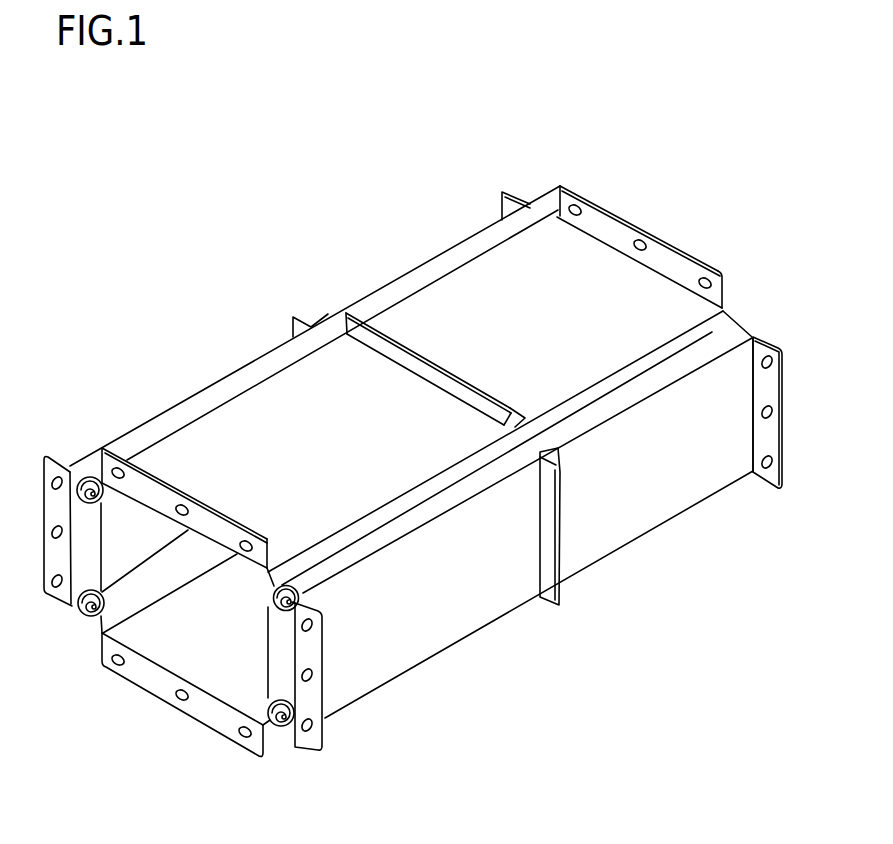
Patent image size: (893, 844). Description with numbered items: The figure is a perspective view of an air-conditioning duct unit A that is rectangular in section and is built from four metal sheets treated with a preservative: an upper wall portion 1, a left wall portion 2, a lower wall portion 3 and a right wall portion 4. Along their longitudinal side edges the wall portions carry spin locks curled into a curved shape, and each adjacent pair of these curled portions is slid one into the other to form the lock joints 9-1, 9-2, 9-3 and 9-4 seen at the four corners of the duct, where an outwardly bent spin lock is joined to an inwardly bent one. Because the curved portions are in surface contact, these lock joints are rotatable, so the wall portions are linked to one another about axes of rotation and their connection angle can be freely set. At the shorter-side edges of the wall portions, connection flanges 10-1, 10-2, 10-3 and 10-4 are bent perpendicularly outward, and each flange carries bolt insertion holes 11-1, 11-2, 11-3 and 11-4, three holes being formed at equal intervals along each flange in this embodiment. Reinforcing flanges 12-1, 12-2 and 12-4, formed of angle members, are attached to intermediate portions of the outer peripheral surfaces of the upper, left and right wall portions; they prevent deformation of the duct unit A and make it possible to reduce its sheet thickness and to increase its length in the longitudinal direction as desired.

The air-conditioning duct unit A is at (204, 326).
The upper wall portion 1 is at (273, 418).
The left wall portion 2 is at (87, 560).
The lower wall portion 3 is at (177, 648).
The right wall portion 4 is at (433, 607).
The lock joint 9-1 is at (170, 403).
The lock joint 9-2 is at (157, 592).
The lock joint 9-3 is at (267, 686).
The lock joint 9-4 is at (372, 517).
The connection flange 10-1 is at (231, 528).
The connection flange 10-2 is at (50, 456).
The connection flange 10-3 is at (213, 720).
The connection flange 10-4 is at (318, 697).
The bolt insertion holes 11-1 is at (182, 505).
The bolt insertion holes 11-2 is at (63, 533).
The bolt insertion holes 11-3 is at (182, 701).
The bolt insertion holes 11-4 is at (313, 678).
The reinforcing flange 12-1 is at (447, 385).
The reinforcing flange 12-2 is at (296, 316).
The reinforcing flange 12-4 is at (552, 565).